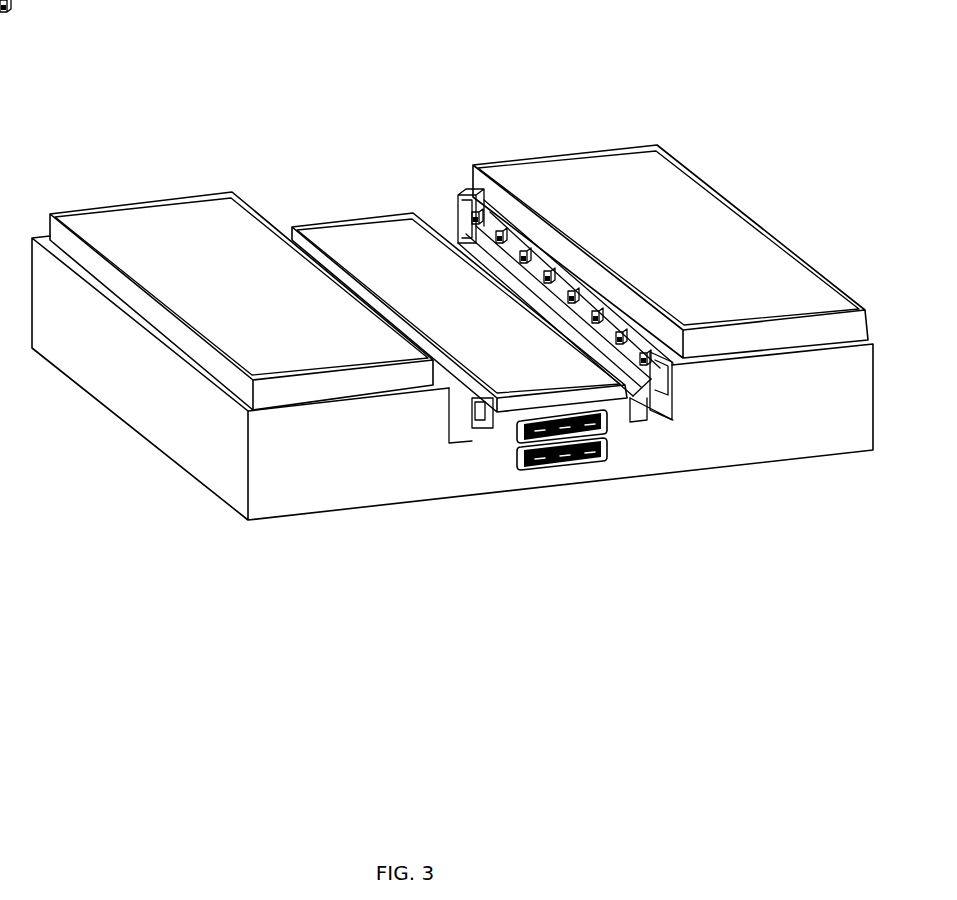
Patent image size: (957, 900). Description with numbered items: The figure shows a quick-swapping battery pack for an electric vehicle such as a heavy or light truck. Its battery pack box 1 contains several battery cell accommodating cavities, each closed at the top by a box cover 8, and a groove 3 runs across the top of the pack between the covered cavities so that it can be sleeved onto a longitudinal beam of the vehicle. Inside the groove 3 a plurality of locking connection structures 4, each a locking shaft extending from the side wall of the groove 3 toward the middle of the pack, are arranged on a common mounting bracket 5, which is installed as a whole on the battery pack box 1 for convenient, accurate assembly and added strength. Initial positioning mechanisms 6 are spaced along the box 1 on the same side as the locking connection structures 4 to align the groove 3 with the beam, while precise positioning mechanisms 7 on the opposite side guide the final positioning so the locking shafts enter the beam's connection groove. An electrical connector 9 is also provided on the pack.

The battery pack box 1 is at (376, 482).
The groove 3 is at (463, 427).
The locking connection structure 4 is at (556, 303).
The mounting bracket 5 is at (585, 300).
The initial positioning mechanism 6 is at (485, 167).
The precise positioning mechanisms 7 is at (483, 427).
The box cover 8 is at (203, 212).
The electrical connector 9 is at (565, 450).